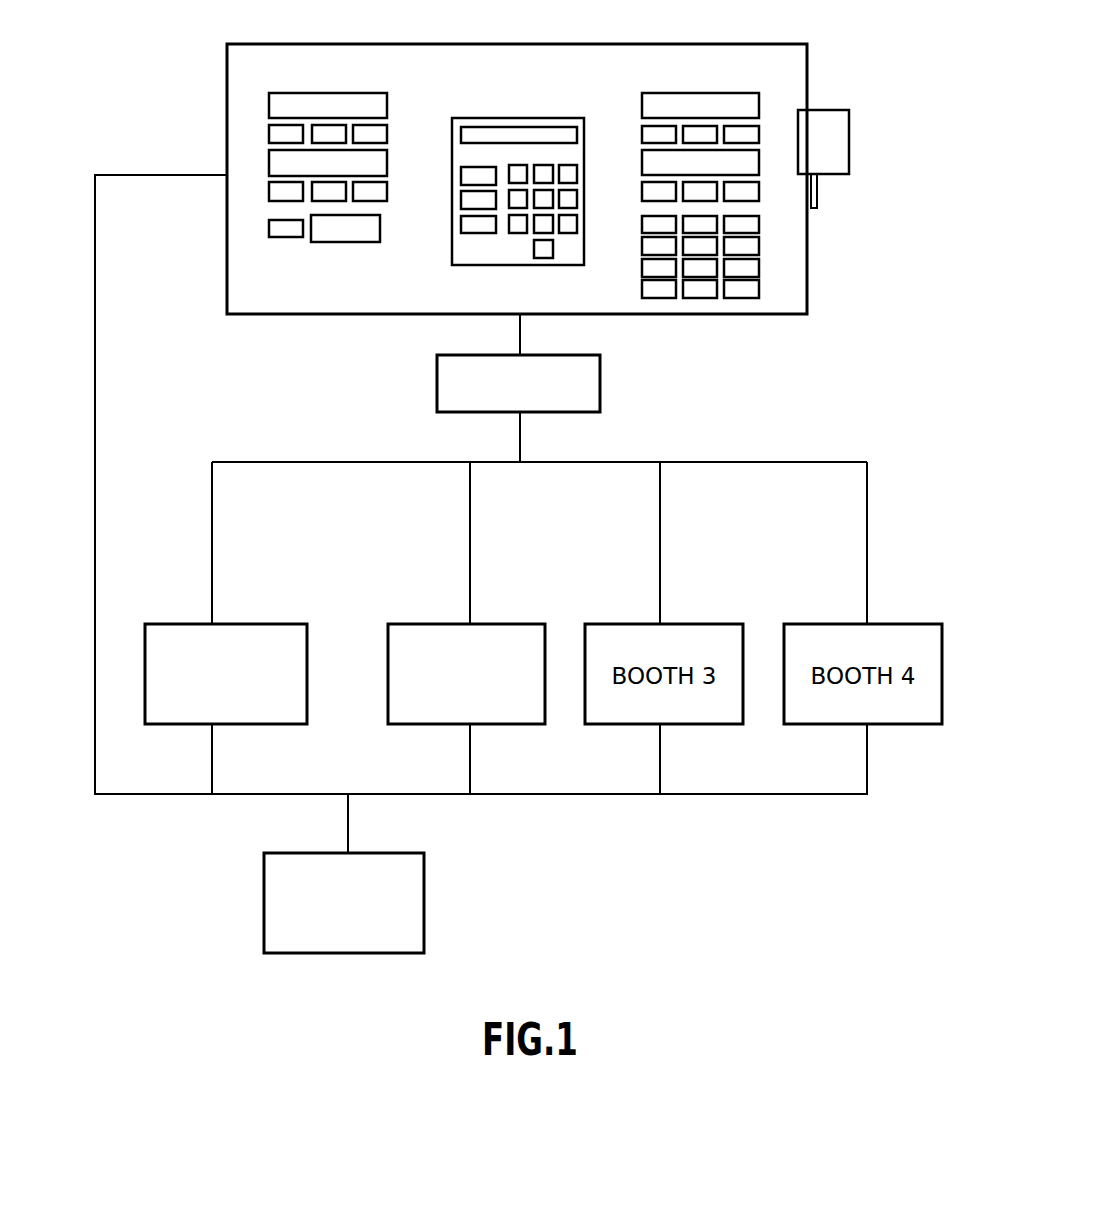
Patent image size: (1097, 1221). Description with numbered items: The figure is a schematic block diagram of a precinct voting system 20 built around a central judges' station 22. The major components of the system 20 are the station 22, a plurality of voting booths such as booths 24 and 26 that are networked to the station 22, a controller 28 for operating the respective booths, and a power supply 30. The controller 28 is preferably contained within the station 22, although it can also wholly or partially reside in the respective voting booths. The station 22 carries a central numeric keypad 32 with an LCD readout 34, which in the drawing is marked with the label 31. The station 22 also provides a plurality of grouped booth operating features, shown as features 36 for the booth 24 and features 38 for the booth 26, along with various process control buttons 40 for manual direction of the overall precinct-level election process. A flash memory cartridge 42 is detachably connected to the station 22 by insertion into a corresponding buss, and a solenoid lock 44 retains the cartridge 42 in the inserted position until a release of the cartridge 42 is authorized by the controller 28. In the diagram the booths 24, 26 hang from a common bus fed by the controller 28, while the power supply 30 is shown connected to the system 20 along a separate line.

The precinct voting system 20 is at (167, 170).
The central judges' station 22 is at (513, 62).
The voting booth 24 is at (257, 624).
The voting booth 26 is at (518, 624).
The controller 28 is at (600, 368).
The power supply 30 is at (427, 897).
The control panel 31 is at (365, 151).
The central numeric keypad 32 is at (503, 214).
The LCD readout 34 is at (522, 132).
The booth operating features 36 is at (397, 93).
The booth operating features 38 is at (397, 150).
The process control buttons 40 is at (740, 298).
The flash memory cartridge 42 is at (832, 128).
The solenoid lock 44 is at (822, 188).